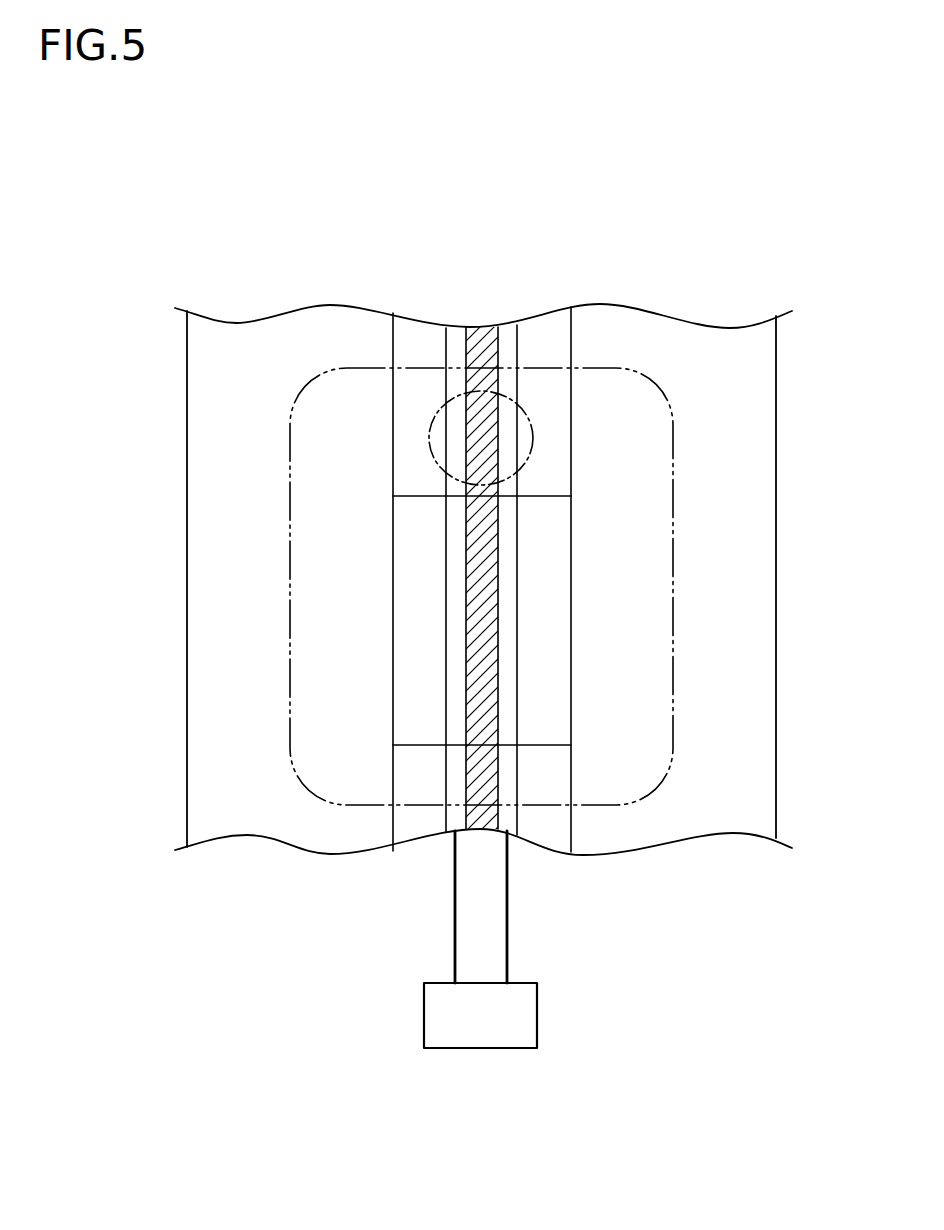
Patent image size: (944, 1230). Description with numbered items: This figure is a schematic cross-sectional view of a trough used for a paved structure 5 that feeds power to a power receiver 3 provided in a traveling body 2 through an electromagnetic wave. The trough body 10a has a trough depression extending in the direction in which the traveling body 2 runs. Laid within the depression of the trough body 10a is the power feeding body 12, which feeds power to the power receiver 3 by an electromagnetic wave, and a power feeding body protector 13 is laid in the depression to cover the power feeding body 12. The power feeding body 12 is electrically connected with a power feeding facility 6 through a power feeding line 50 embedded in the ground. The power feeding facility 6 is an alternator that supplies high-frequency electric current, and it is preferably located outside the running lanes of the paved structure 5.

The traveling body 2 is at (673, 492).
The power receiver 3 is at (533, 440).
The paved structure 5 is at (750, 720).
The power feeding facility 6 is at (520, 1012).
The trough body 10a is at (571, 344).
The power feeding body 12 is at (460, 553).
The power feeding body protector 13 is at (548, 615).
The power feeding line 50 is at (508, 930).